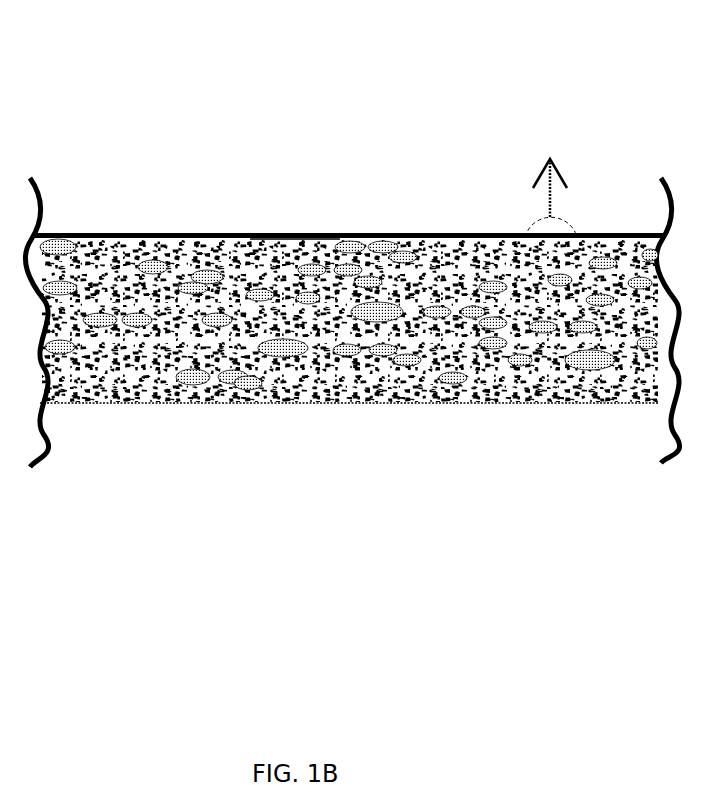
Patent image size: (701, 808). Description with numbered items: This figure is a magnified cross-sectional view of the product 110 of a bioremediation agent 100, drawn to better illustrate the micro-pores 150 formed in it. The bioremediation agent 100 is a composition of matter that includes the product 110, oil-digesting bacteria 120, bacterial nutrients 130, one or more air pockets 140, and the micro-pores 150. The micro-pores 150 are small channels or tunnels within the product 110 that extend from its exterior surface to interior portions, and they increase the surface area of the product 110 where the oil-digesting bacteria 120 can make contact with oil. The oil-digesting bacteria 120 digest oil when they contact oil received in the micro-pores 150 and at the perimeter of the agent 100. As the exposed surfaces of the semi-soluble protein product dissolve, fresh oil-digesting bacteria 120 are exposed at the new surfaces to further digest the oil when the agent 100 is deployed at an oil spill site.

The bioremediation agent 100 is at (134, 58).
The product 110 is at (122, 233).
The oil-digesting bacteria 120 is at (183, 233).
The bacterial nutrients 130 is at (438, 403).
The air pockets 140 is at (295, 233).
The micro-pores 150 is at (453, 237).